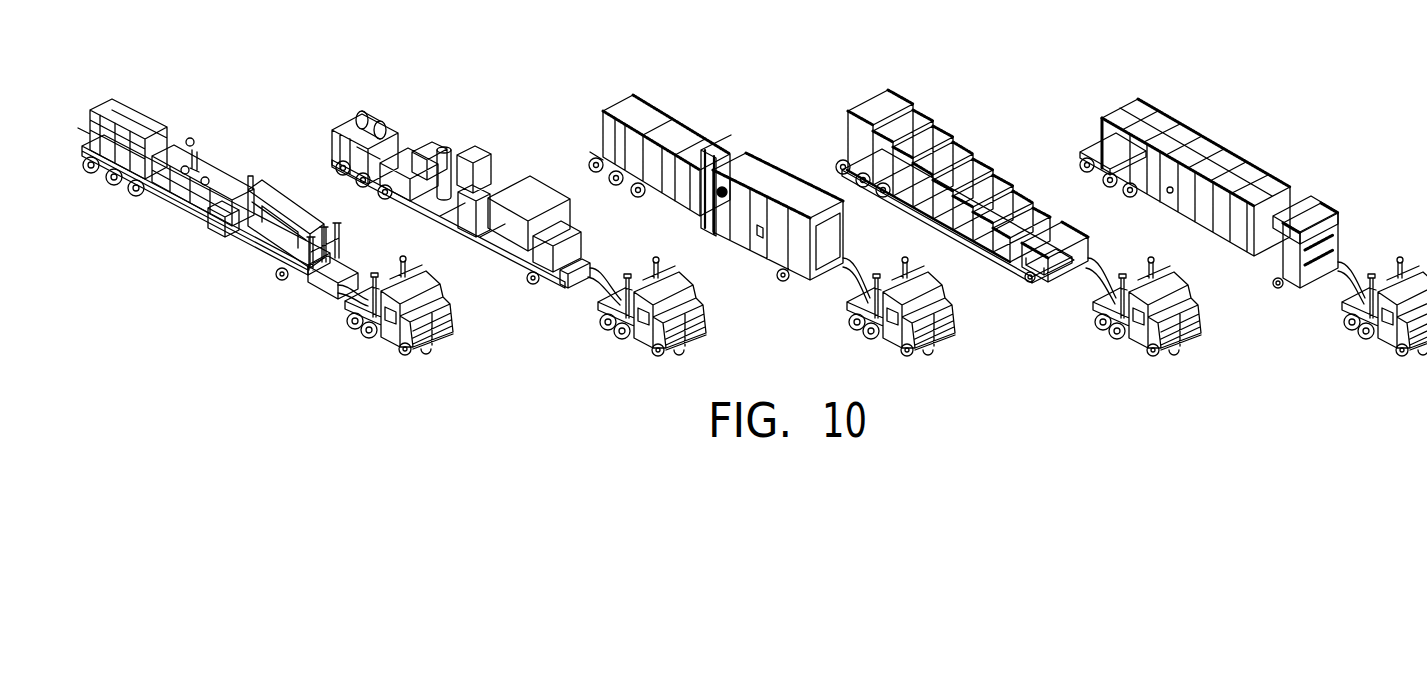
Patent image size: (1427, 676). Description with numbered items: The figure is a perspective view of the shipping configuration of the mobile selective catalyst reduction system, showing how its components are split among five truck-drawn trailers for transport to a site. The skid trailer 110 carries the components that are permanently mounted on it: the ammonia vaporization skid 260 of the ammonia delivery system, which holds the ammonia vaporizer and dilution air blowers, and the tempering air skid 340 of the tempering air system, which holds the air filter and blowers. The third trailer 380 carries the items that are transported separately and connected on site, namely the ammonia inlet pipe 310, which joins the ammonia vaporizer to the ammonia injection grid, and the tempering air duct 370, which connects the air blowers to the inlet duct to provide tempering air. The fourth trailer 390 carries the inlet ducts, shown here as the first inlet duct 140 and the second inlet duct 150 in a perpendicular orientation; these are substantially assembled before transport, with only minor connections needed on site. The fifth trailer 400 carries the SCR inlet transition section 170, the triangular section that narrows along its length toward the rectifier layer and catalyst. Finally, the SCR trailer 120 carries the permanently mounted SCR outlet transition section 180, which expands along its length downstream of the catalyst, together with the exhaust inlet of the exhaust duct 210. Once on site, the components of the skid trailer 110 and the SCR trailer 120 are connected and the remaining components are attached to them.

The skid trailer 110 is at (517, 267).
The SCR trailer 120 is at (1300, 278).
The first inlet duct 140 is at (680, 113).
The second inlet duct 150 is at (775, 157).
The SCR inlet transition section 170 is at (922, 112).
The SCR outlet transition section 180 is at (1177, 118).
The exhaust duct 210 is at (1338, 218).
The ammonia vaporization skid 260 is at (443, 140).
The ammonia inlet pipe 310 is at (198, 148).
The tempering air skid 340 is at (543, 182).
The tempering air duct 370 is at (285, 193).
The third trailer 380 is at (300, 290).
The fourth trailer 390 is at (806, 293).
The fifth trailer 400 is at (1043, 291).